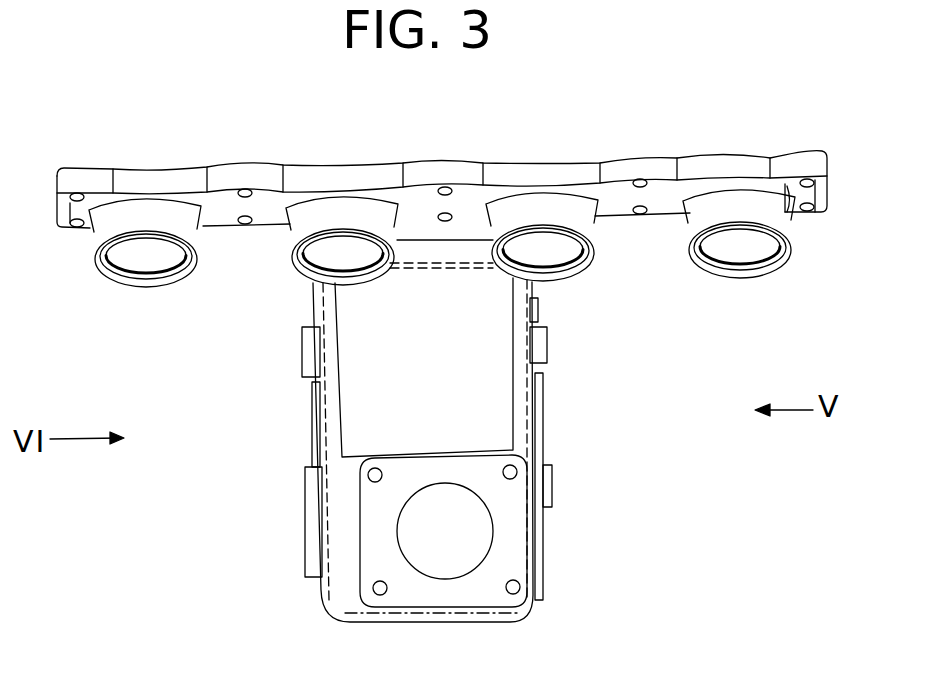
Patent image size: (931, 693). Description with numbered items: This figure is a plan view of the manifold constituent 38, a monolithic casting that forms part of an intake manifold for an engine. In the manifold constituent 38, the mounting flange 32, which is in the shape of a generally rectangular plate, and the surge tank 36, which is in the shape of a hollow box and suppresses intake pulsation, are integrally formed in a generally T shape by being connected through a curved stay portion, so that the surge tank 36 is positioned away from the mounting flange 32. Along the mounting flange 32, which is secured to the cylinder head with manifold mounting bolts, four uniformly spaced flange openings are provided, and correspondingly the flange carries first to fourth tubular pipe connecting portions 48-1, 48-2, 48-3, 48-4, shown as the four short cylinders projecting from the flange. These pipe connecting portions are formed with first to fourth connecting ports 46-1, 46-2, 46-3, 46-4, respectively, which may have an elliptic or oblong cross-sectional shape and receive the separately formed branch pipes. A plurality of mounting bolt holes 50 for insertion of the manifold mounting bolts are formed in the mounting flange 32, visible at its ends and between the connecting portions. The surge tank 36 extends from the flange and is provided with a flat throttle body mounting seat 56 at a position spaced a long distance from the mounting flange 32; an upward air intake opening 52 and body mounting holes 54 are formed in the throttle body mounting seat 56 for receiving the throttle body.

The manifold constituent 38 is at (645, 117).
The mounting flange 32 is at (790, 165).
The mounting bolt holes 50 is at (75, 193).
The first tubular pipe connecting portion 48-1 is at (793, 243).
The second tubular pipe connecting portion 48-2 is at (597, 257).
The third tubular pipe connecting portion 48-3 is at (300, 278).
The fourth tubular pipe connecting portion 48-4 is at (100, 281).
The first connecting port 46-1 is at (737, 247).
The second connecting port 46-2 is at (550, 247).
The third connecting port 46-3 is at (328, 250).
The fourth connecting port 46-4 is at (147, 250).
The surge tank 36 is at (553, 583).
The throttle body mounting seat 56 is at (510, 547).
The air intake opening 52 is at (447, 563).
The body mounting holes 54 is at (513, 470).